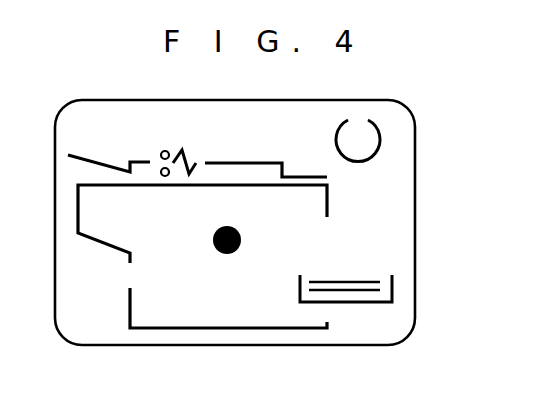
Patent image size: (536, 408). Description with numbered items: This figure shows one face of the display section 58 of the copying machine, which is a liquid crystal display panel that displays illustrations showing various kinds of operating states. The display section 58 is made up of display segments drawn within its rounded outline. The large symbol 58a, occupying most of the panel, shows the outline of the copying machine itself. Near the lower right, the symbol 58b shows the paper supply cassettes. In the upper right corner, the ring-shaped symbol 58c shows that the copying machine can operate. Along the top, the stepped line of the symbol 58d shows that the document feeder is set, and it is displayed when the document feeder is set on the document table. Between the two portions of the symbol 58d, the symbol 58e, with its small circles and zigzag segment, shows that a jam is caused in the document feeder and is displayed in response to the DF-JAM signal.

The display section 58 is at (418, 250).
The symbol for showing the outline of the copying machine 58a is at (270, 330).
The symbol for showing the paper supply cassettes 58b is at (362, 305).
The symbol for showing that the copying machine can operate 58c is at (367, 163).
The symbol for showing that the document feeder is set 58d is at (140, 159).
The symbol for showing that a jam is caused in the document feeder 58e is at (196, 158).